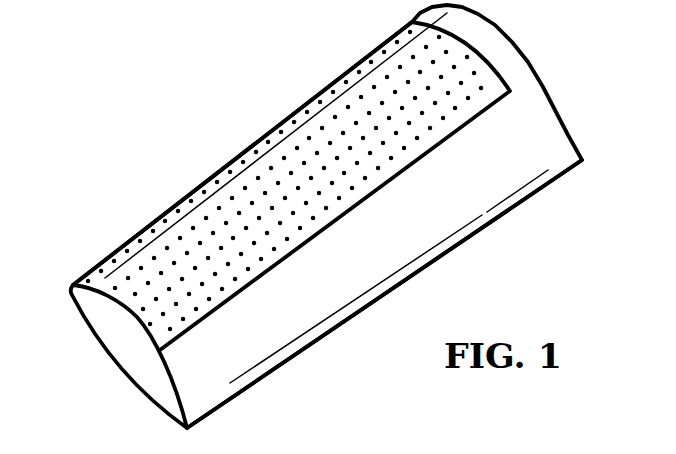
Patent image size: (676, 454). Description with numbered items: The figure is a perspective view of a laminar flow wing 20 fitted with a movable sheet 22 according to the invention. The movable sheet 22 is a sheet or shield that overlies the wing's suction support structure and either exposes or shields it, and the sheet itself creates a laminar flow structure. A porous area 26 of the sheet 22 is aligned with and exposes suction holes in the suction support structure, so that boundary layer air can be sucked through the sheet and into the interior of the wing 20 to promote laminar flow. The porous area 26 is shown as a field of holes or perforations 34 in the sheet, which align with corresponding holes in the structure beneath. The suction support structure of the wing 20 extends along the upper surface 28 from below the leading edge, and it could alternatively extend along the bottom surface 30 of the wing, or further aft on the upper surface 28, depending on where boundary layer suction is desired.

The laminar flow wing 20 is at (223, 118).
The movable sheet 22 is at (105, 243).
The porous area 26 is at (325, 113).
The upper surface 28 is at (341, 286).
The bottom surface 30 is at (127, 360).
The holes or perforations 34 is at (355, 83).